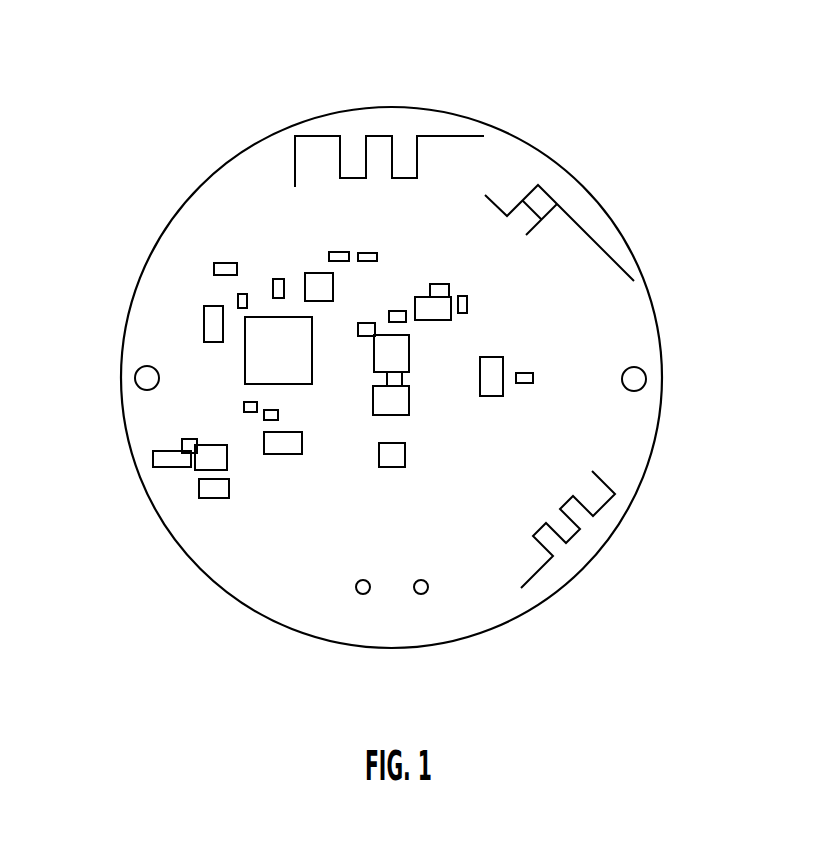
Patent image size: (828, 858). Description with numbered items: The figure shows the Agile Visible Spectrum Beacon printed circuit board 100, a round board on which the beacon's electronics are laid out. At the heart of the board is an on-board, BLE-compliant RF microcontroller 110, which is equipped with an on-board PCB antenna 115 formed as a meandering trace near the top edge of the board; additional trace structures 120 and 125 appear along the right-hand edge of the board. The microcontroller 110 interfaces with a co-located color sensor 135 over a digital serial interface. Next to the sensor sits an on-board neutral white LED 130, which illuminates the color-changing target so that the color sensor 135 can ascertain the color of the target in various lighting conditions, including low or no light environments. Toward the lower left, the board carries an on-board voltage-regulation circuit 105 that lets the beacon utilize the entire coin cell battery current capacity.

The printed circuit board 100 is at (140, 75).
The voltage-regulation circuit 105 is at (213, 456).
The RF microcontroller 110 is at (270, 342).
The PCB antenna 115 is at (387, 133).
The second antenna 120 is at (590, 232).
The third antenna 125 is at (606, 508).
The neutral white LED 130 is at (390, 348).
The color sensor 135 is at (392, 408).